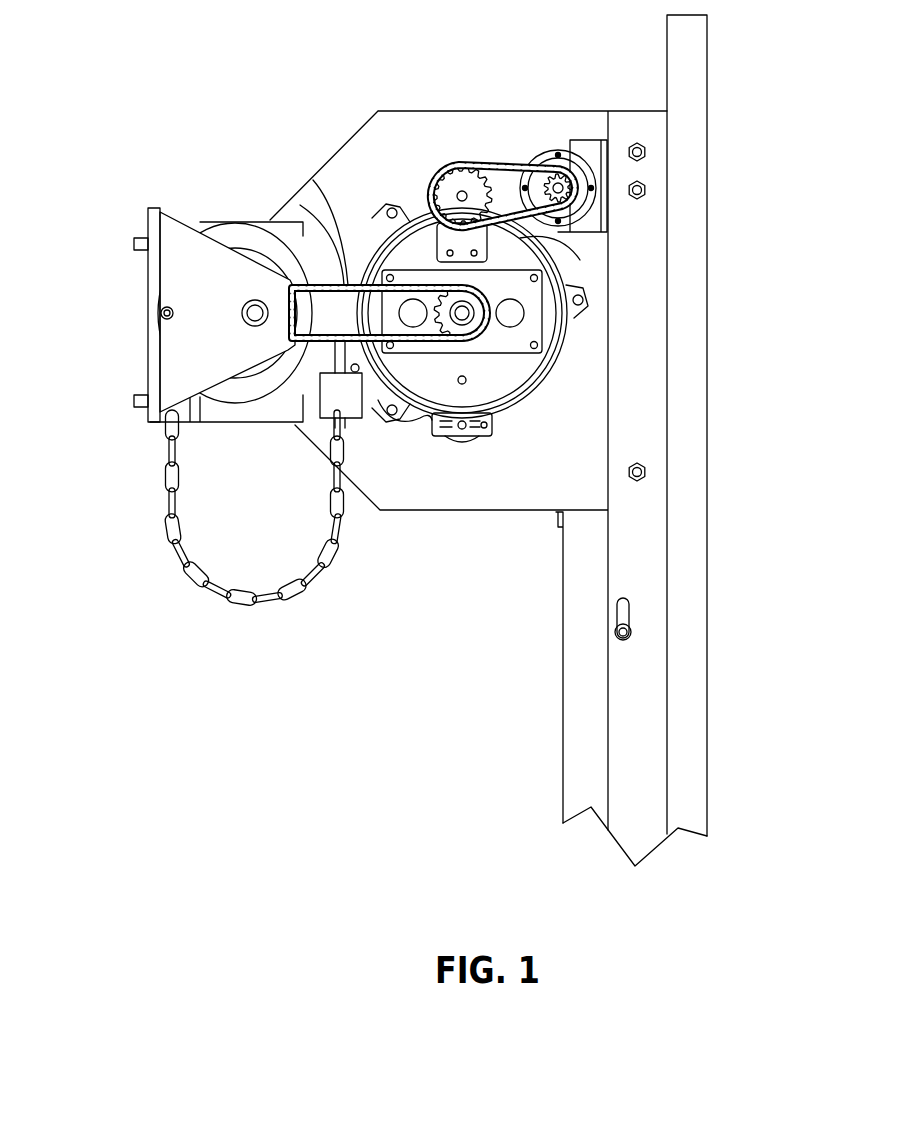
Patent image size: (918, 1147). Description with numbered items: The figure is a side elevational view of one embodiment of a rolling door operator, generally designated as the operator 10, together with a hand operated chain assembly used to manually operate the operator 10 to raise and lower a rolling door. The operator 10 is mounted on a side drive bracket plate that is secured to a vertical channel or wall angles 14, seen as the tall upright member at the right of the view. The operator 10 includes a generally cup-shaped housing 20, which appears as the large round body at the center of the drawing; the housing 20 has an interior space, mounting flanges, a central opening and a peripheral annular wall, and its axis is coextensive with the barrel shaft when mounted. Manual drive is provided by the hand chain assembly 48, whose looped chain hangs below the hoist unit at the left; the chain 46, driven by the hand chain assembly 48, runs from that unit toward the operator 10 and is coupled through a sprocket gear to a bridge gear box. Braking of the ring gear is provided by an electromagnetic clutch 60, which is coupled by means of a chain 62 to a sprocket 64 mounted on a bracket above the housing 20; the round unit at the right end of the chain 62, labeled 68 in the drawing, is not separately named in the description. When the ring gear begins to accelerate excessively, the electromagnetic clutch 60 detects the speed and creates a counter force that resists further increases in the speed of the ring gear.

The operator 10 is at (226, 59).
The vertical channel or wall angles 14 is at (700, 48).
The housing 20 is at (577, 375).
The chain 46 is at (349, 282).
The hand chain assembly 48 is at (116, 465).
The electromagnetic clutch 60 is at (505, 123).
The chain 62 is at (494, 167).
The sprocket 64 is at (451, 188).
The gear reducer 68 is at (559, 156).